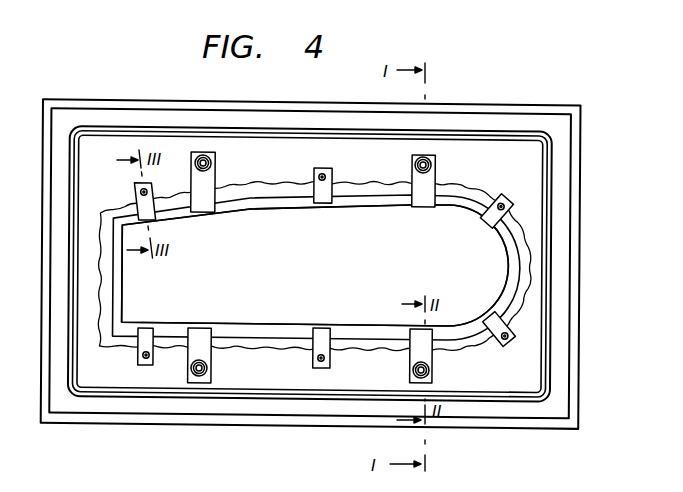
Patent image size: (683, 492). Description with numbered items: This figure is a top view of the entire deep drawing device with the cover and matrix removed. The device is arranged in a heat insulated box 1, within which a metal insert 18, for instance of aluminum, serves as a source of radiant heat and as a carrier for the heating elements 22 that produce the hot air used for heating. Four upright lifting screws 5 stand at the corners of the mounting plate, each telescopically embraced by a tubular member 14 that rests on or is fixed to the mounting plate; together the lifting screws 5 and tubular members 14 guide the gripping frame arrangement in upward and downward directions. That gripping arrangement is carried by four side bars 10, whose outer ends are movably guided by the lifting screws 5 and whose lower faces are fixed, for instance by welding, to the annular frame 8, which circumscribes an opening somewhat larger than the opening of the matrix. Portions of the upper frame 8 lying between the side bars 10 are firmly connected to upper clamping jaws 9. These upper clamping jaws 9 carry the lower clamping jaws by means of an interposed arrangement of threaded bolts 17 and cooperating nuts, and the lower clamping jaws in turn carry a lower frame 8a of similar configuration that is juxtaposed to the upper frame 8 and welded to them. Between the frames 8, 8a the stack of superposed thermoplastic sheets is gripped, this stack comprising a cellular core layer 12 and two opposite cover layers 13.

The heat insulated box 1 is at (185, 117).
The metal insert 18 is at (117, 140).
The heating elements 22 is at (510, 137).
The upper clamping jaws 9 is at (148, 208).
The side bars 10 is at (206, 200).
The annular frame 8 is at (352, 333).
The lower frame 8a is at (315, 263).
The threaded bolts 17 is at (135, 191).
The tubular members 14 is at (210, 165).
The cellular core layer 12 is at (475, 339).
The cover layers 13 is at (498, 328).
The lifting screws 5 is at (197, 165).